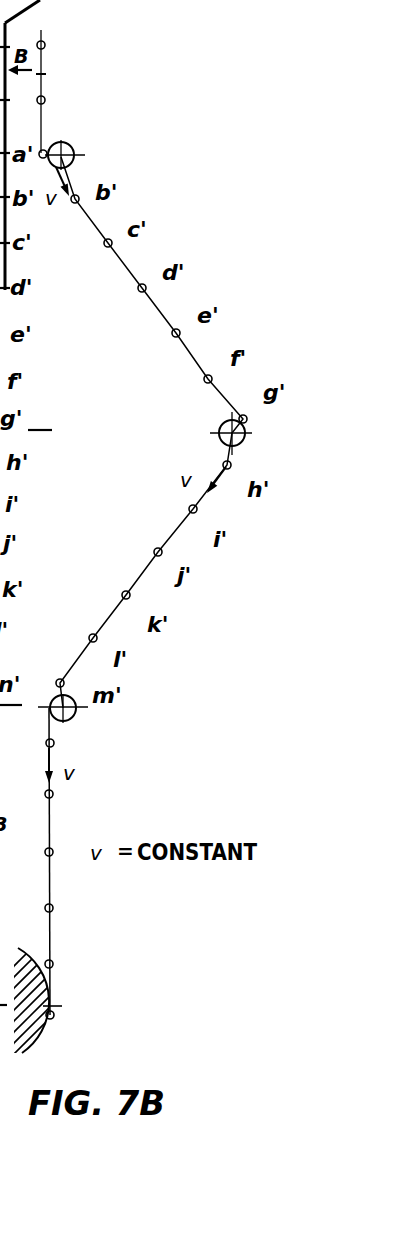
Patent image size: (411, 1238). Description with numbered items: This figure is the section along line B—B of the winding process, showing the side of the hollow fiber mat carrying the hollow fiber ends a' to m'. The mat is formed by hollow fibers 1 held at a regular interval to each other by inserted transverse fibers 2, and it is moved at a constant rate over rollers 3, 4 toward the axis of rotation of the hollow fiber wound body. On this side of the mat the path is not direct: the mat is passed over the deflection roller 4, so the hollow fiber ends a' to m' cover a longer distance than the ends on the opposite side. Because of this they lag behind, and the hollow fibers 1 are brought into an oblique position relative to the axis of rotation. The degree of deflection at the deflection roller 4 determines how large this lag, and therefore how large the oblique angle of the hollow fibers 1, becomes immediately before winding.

The hollow fibers 1 is at (44, 46).
The inserted transverse fibers 2 is at (44, 74).
The roller 3 is at (62, 148).
The deflection roller 4 is at (247, 440).